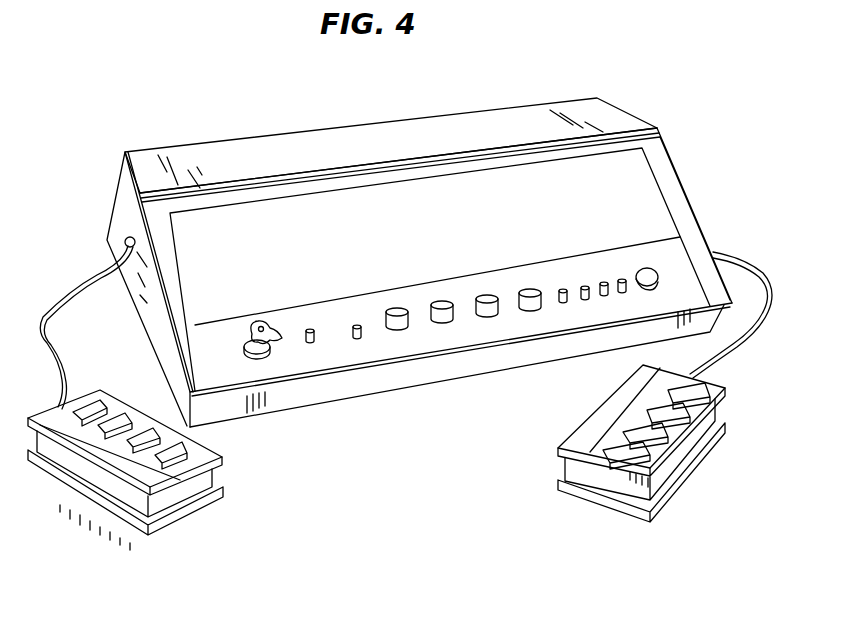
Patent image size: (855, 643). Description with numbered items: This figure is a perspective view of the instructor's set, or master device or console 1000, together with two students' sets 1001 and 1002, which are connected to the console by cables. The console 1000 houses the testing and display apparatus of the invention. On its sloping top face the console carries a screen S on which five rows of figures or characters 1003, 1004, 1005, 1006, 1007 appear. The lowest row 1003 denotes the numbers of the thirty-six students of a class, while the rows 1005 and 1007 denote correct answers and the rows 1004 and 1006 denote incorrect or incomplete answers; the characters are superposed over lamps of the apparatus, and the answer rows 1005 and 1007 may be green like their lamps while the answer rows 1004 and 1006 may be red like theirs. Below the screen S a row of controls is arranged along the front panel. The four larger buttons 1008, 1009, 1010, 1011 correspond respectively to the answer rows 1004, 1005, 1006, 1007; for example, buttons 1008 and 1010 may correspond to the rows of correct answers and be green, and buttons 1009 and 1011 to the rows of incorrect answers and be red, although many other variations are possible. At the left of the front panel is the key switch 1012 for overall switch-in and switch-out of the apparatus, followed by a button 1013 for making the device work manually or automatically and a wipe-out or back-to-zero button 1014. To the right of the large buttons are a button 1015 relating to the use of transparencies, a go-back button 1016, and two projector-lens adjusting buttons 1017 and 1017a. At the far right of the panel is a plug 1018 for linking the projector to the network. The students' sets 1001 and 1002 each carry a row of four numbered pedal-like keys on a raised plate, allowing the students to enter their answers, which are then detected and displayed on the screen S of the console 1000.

The instructor's set or master device or console 1000 is at (477, 118).
The student's set 1001 is at (175, 493).
The student's set 1002 is at (605, 475).
The row of figures denoting student numbers 1003 is at (663, 228).
The answer row of incorrect or incomplete answers 1004 is at (645, 218).
The answer row of correct answers 1005 is at (640, 205).
The answer row of incorrect or incomplete answers 1006 is at (627, 185).
The answer row of correct answers 1007 is at (620, 168).
The button 1008 is at (397, 330).
The button 1009 is at (442, 322).
The button 1010 is at (487, 316).
The button 1011 is at (530, 310).
The key switch 1012 is at (275, 352).
The manual/automatic button 1013 is at (310, 346).
The wipe-out or back-to-zero button 1014 is at (357, 340).
The transparencies button 1015 is at (563, 303).
The go-back button 1016 is at (585, 300).
The projector-lens adjusting button 1017 is at (624, 293).
The projector-lens adjusting button 1017a is at (607, 296).
The plug 1018 is at (660, 276).
The screen S is at (185, 237).